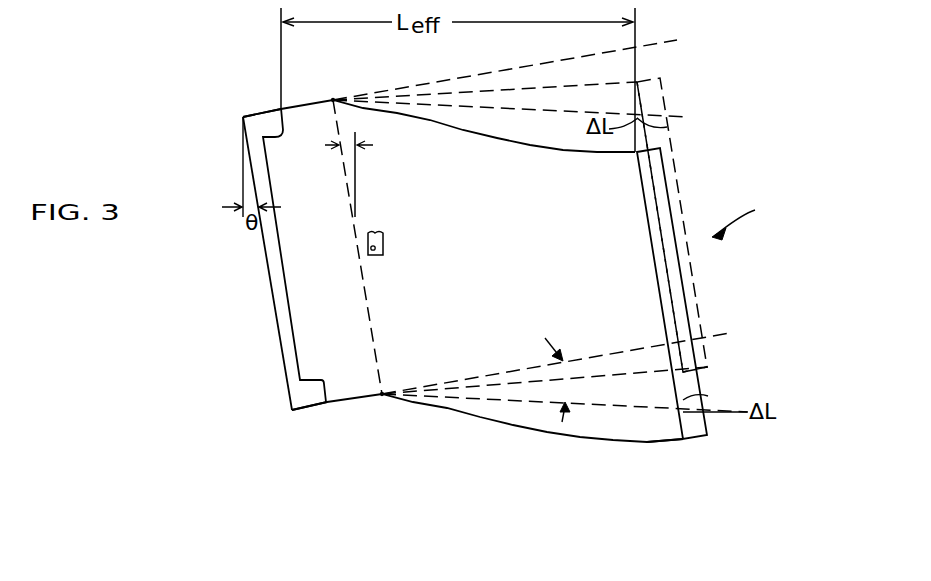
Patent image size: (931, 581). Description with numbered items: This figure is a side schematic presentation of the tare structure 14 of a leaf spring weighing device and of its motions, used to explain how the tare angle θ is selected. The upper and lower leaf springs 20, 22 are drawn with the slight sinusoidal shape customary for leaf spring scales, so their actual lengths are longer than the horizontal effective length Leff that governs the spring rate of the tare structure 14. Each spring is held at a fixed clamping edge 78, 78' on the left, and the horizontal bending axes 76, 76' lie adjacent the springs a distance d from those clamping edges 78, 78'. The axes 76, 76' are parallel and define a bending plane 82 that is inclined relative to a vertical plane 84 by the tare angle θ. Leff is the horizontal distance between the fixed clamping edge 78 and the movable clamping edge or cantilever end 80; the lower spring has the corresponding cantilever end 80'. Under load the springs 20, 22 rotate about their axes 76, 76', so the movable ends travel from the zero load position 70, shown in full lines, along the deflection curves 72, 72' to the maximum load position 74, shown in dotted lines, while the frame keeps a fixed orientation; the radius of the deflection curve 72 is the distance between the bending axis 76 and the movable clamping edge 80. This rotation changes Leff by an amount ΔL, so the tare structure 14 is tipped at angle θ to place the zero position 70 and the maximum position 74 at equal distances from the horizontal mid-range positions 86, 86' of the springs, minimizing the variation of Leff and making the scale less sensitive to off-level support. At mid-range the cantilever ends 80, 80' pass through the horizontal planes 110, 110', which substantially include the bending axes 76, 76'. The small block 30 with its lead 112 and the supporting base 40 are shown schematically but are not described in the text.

The tare structure 14 is at (748, 214).
The leaf spring 20 is at (453, 124).
The leaf spring 22 is at (533, 422).
The sensor 30 is at (383, 244).
The mounting base 40 is at (281, 345).
The zero load position 70 is at (697, 82).
The deflection curve 72 is at (670, 227).
The deflection curve 72' is at (715, 377).
The maximum load position 74 is at (711, 172).
The horizontal bending axis 76 is at (319, 81).
The horizontal bending axis 76' is at (403, 365).
The clamping edge 78 is at (256, 94).
The clamping edge 78' is at (303, 426).
The cantilever end 80 is at (615, 167).
The cantilever end 80' is at (663, 461).
The bending plane 82 is at (347, 184).
The vertical plane 84 is at (357, 173).
The horizontal mid-range position 86 is at (678, 131).
The horizontal mid-range position 86' is at (738, 375).
The horizontal plane 110 is at (510, 132).
The horizontal plane 110' is at (565, 371).
The sensor lead 112 is at (372, 250).